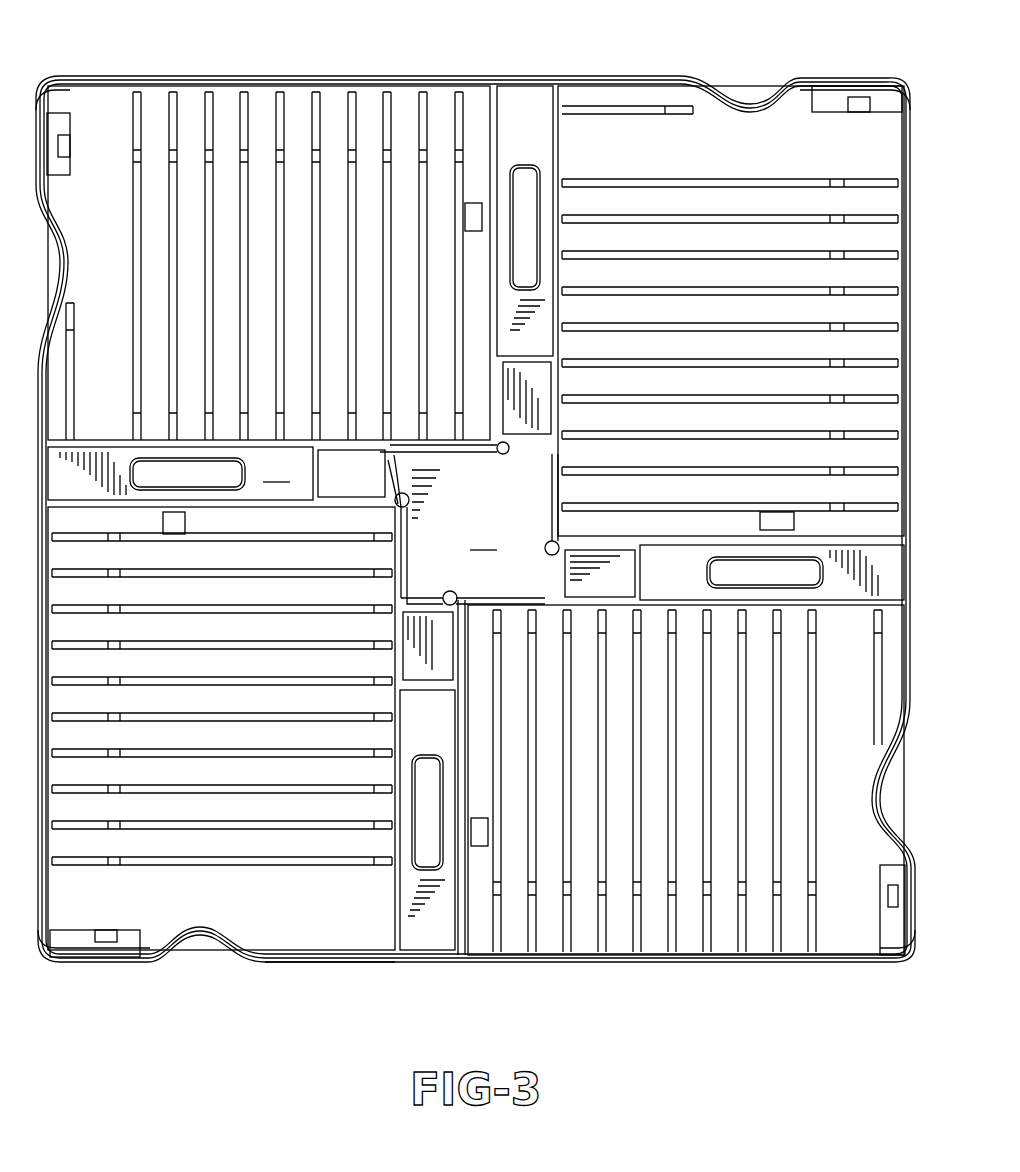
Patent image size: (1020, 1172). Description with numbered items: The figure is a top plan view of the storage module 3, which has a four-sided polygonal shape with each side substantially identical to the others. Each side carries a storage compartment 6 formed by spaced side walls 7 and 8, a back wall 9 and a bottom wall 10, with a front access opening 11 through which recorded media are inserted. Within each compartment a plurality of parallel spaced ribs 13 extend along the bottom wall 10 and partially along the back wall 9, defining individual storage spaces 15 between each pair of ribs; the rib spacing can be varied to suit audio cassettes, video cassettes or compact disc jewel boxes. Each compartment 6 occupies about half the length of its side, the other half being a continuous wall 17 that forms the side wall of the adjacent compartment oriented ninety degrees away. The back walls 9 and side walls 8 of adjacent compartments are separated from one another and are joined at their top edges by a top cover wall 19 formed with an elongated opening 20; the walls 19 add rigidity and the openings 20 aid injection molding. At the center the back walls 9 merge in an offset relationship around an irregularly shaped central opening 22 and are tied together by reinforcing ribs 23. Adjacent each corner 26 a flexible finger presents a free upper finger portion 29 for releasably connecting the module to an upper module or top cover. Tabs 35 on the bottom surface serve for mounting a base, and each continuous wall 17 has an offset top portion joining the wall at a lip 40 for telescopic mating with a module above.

The module 3 is at (588, 44).
The storage compartment 6 is at (105, 122).
The side wall 7 is at (47, 372).
The side wall 8 is at (462, 942).
The back wall 9 is at (848, 605).
The bottom wall 10 is at (660, 940).
The front access opening 11 is at (305, 95).
The ribs 13 is at (290, 860).
The storage spaces 15 is at (232, 125).
The continuous wall 17 is at (690, 80).
The top cover wall 19 is at (428, 935).
The elongated opening 20 is at (525, 180).
The central opening 22 is at (469, 524).
The reinforcing ribs 23 is at (500, 452).
The corner 26 is at (900, 80).
The upper finger portion 29 is at (835, 113).
The tabs 35 is at (183, 520).
The lip 40 is at (365, 966).